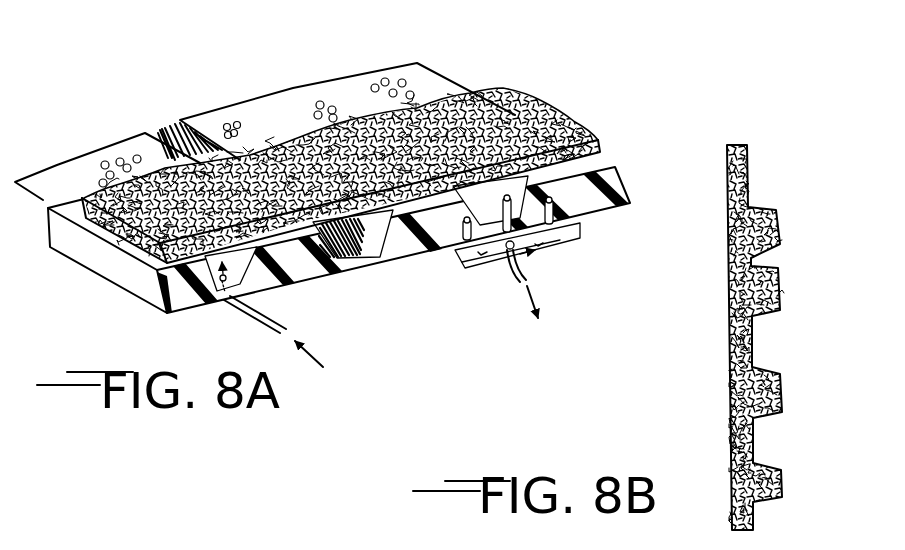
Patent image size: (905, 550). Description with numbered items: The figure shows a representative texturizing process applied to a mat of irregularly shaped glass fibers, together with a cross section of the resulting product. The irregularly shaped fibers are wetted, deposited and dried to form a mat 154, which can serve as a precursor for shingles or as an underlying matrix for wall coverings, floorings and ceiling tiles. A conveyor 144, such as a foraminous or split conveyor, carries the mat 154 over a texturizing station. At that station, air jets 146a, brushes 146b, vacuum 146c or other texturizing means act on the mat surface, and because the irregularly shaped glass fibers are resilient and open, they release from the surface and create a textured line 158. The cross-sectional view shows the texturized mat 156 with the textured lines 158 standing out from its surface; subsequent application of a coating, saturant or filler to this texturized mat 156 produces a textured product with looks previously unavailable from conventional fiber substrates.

In FIG. 8A, the conveyor 144 is at (110, 143).
In FIG. 8A, the mat 154 is at (517, 108).
In FIG. 8A, the air jets 146a is at (268, 300).
In FIG. 8A, the brushes 146b is at (362, 240).
In FIG. 8A, the vacuum 146c is at (543, 252).
In FIG. 8B, the texturized mat 156 is at (727, 143).
In FIG. 8B, the textured line 158 is at (778, 293).